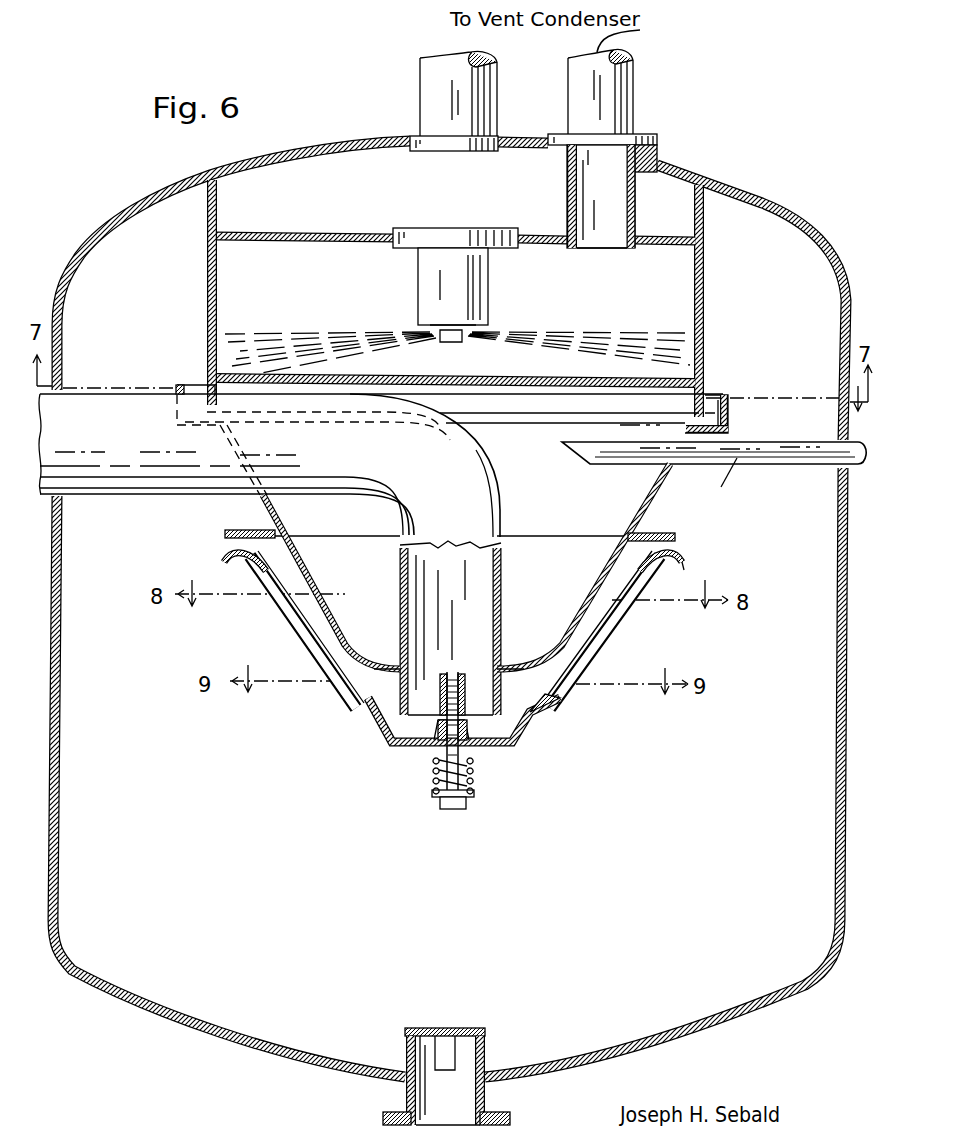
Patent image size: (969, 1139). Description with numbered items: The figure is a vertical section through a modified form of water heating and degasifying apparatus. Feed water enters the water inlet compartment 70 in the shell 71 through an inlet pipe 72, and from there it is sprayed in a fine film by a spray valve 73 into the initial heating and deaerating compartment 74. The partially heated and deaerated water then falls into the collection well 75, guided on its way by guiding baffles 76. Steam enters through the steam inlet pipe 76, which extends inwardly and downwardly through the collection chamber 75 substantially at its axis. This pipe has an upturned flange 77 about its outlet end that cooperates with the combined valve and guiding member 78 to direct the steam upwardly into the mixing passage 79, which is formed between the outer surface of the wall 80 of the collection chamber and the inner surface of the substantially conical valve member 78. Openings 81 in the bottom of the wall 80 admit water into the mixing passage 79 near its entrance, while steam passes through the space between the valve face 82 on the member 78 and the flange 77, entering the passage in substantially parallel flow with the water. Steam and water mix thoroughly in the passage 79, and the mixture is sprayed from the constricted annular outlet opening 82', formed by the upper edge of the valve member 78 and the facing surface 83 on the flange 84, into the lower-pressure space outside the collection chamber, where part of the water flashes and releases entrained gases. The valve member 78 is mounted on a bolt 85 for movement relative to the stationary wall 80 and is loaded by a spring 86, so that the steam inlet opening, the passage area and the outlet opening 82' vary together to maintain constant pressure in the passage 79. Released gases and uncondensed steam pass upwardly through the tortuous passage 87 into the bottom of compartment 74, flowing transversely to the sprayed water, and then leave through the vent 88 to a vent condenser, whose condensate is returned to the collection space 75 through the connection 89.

The water inlet compartment 70 is at (325, 182).
The shell 71 is at (752, 191).
The inlet pipe 72 is at (466, 100).
The spray valve 73 is at (470, 290).
The initial heating and deaerating compartment 74 is at (665, 303).
The collection well 75 is at (612, 503).
The steam inlet pipe 76 is at (690, 380).
The upturned flange 77 is at (535, 715).
The combined valve and guiding member 78 is at (607, 632).
The mixing passage 79 is at (625, 602).
The wall of the water collection chamber 80 is at (608, 584).
The openings 81 is at (392, 667).
The valve face 82 is at (448, 741).
The constricted outlet opening 82' is at (745, 577).
The facing surface 83 is at (676, 543).
The flange 84 is at (252, 529).
The bolt 85 is at (458, 757).
The spring 86 is at (436, 766).
The tortuous passage 87 is at (730, 420).
The vent 88 is at (613, 108).
The connection 89 is at (796, 452).